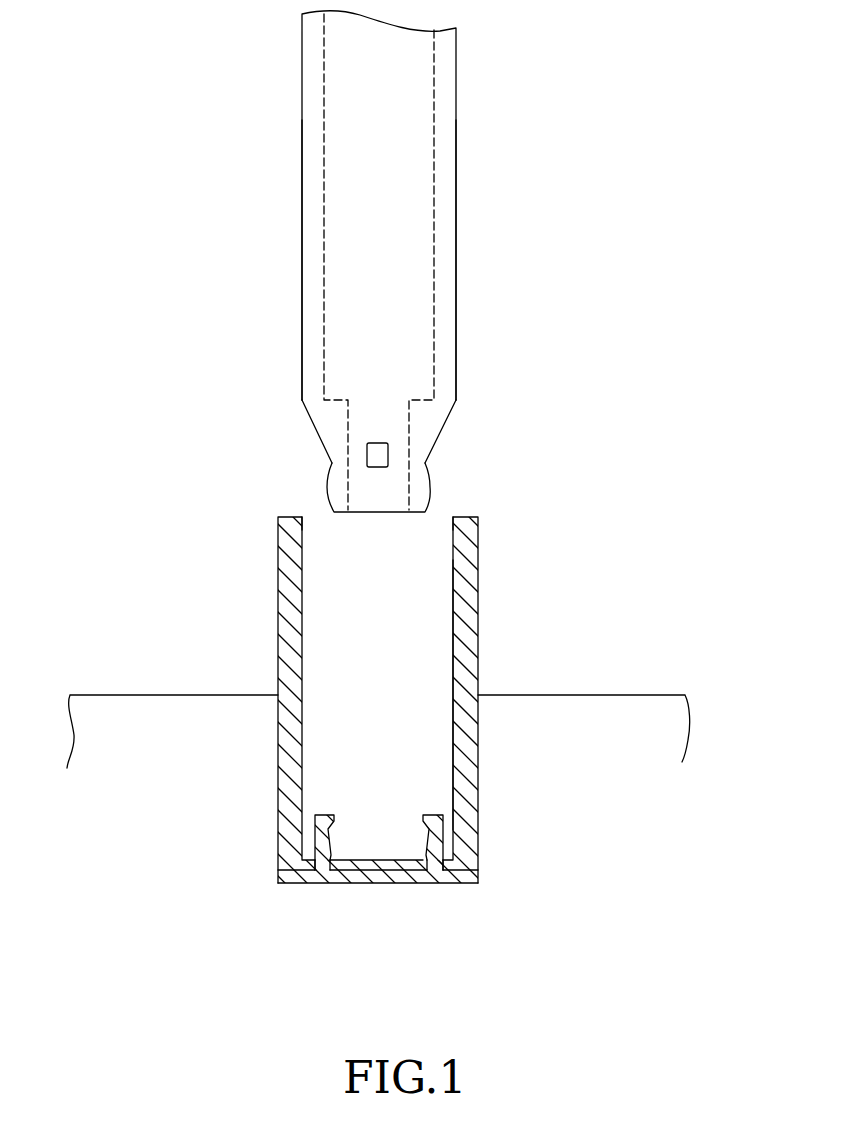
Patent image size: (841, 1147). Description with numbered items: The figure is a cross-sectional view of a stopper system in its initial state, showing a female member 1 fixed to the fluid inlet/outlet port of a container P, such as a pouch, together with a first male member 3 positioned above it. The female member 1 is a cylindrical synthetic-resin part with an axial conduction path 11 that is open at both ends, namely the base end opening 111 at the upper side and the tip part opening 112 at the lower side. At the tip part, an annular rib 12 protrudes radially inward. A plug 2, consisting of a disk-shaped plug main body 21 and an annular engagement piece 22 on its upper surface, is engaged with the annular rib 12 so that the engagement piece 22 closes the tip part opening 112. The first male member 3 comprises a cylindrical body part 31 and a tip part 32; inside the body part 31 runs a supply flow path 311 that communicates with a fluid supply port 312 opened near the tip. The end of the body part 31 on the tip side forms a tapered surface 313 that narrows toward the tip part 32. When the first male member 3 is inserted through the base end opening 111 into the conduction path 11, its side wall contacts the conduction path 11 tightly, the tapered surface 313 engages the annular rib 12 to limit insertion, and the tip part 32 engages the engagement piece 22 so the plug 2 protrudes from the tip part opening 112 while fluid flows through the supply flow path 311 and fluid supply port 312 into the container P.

The female member 1 is at (478, 543).
The conduction path 11 is at (480, 610).
The base end opening 111 is at (318, 515).
The tip part opening 112 is at (322, 870).
The annular rib 12 is at (450, 849).
The plug 2 is at (457, 884).
The plug main body 21 is at (408, 883).
The engagement piece 22 is at (430, 838).
The first male member 3 is at (456, 118).
The body part 31 is at (456, 205).
The supply flow path 311 is at (437, 267).
The fluid supply port 312 is at (388, 451).
The tapered surface 313 is at (317, 435).
The tip part 32 is at (428, 477).
The container P is at (613, 693).